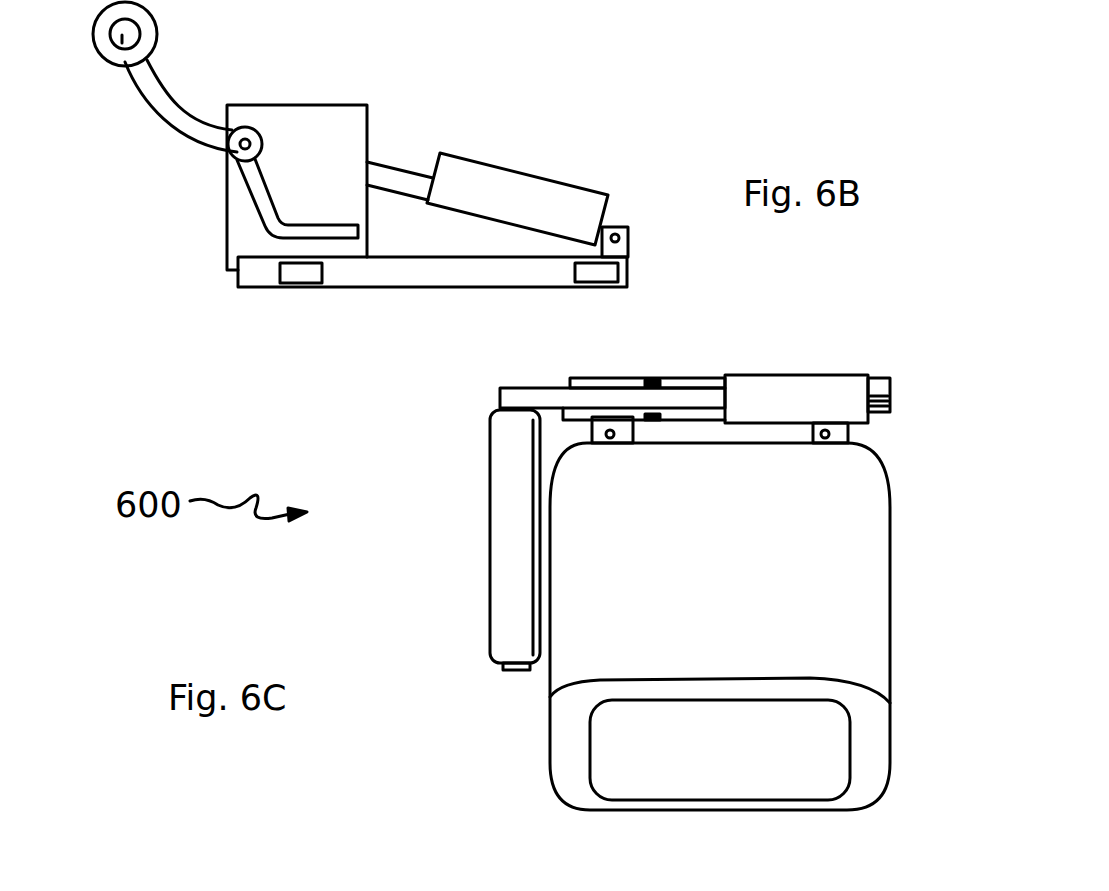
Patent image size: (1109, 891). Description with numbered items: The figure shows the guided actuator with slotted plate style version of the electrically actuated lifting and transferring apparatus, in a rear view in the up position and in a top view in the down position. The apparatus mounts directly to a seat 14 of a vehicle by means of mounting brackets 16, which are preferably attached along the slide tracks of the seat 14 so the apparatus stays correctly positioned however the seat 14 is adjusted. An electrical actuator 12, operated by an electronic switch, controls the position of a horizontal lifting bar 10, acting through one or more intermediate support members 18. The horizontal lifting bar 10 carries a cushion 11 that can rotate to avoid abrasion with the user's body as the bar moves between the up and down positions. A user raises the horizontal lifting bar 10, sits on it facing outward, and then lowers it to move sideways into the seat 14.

In FIG. 6B, the horizontal lifting bar 10 is at (123, 62).
In FIG. 6C, the horizontal lifting bar 10 is at (500, 668).
In FIG. 6B, the cushion 11 is at (107, 55).
In FIG. 6C, the cushion 11 is at (508, 588).
In FIG. 6B, the electrical actuator 12 is at (518, 187).
In FIG. 6C, the electrical actuator 12 is at (830, 388).
In FIG. 6C, the seat 14 is at (597, 650).
In FIG. 6B, the mounting brackets 16 is at (295, 272).
In FIG. 6C, the mounting brackets 16 is at (600, 428).
In FIG. 6B, the intermediate support members 18 is at (175, 122).
In FIG. 6C, the intermediate support members 18 is at (517, 397).